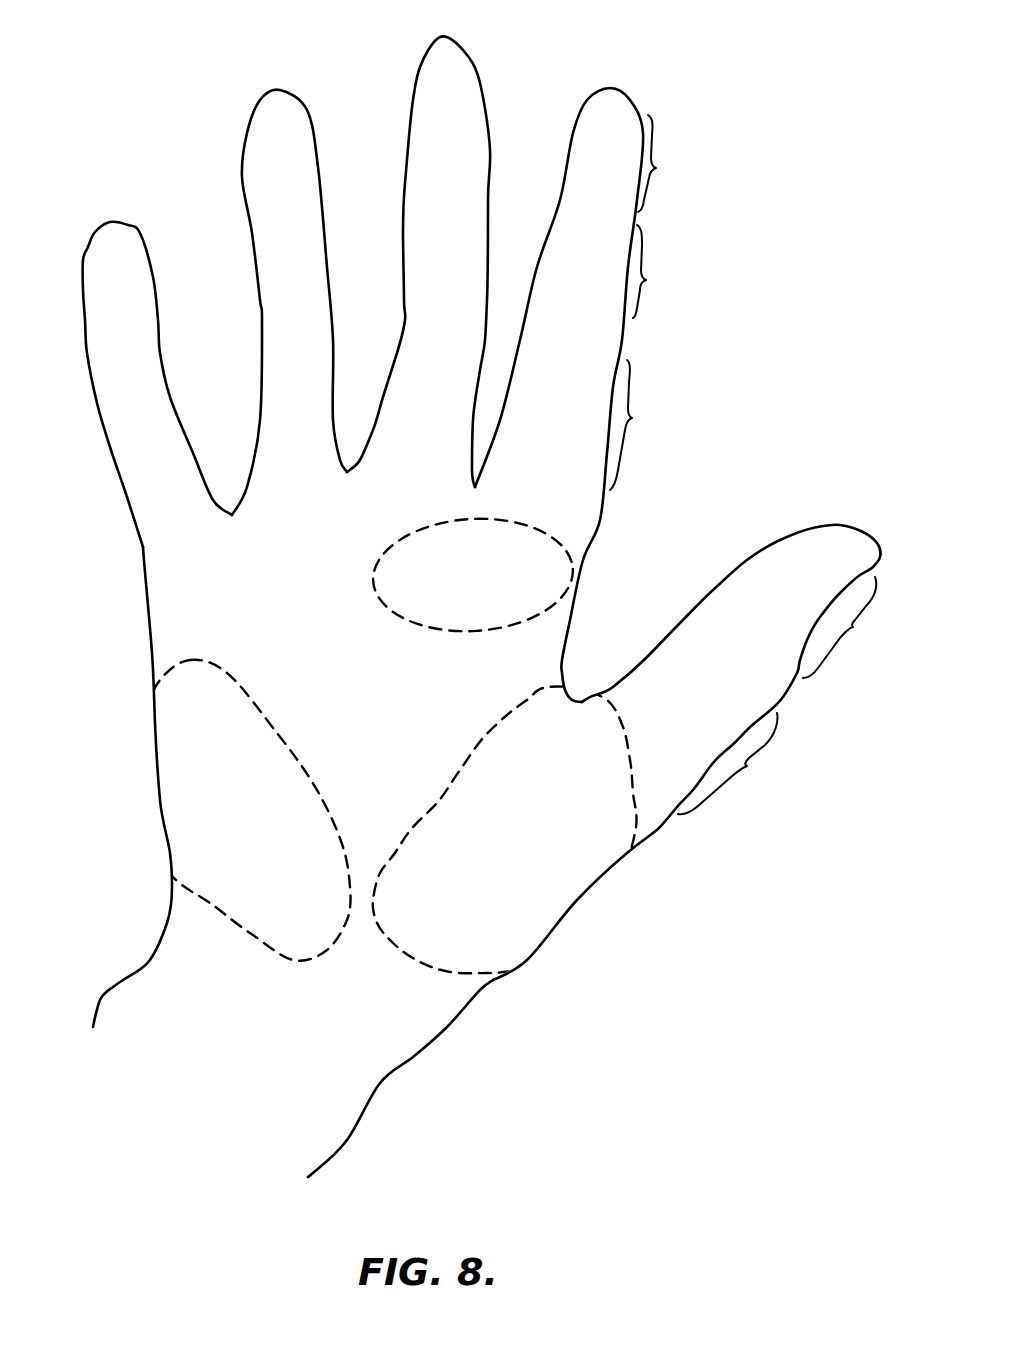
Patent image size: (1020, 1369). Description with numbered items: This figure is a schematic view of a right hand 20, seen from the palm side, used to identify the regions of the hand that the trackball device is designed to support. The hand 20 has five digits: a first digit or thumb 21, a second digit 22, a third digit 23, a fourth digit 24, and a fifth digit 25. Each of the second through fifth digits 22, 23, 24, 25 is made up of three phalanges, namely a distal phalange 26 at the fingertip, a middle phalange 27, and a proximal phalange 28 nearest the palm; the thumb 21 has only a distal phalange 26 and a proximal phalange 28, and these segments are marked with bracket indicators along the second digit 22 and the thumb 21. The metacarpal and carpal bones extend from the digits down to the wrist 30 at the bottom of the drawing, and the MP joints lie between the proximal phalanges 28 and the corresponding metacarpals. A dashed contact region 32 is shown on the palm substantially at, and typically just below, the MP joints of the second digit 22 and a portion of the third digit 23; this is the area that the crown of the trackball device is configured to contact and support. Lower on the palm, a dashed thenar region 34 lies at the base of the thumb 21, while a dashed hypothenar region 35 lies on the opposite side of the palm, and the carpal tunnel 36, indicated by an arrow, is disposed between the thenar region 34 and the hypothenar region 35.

The right hand 20 is at (758, 130).
The thumb 21 is at (783, 557).
The second digit 22 is at (618, 113).
The third digit 23 is at (451, 60).
The fourth digit 24 is at (277, 112).
The fifth digit 25 is at (118, 238).
The distal phalange 26 is at (763, 396).
The middle phalange 27 is at (655, 271).
The proximal phalange 28 is at (694, 587).
The wrist 30 is at (270, 1015).
The contact region 32 is at (520, 567).
The thenar region 34 is at (540, 883).
The hypothenar region 35 is at (183, 798).
The carpal tunnel 36 is at (365, 877).